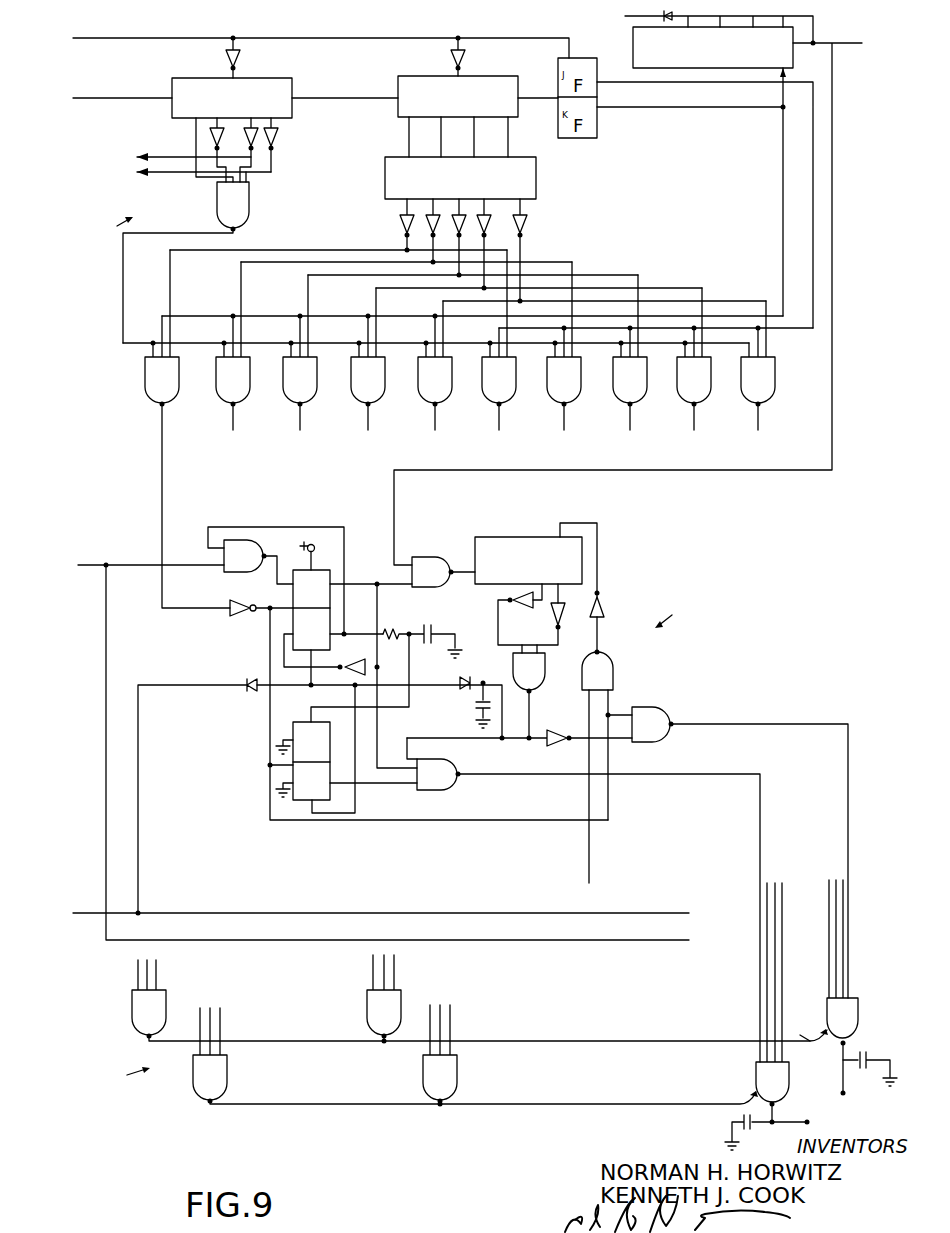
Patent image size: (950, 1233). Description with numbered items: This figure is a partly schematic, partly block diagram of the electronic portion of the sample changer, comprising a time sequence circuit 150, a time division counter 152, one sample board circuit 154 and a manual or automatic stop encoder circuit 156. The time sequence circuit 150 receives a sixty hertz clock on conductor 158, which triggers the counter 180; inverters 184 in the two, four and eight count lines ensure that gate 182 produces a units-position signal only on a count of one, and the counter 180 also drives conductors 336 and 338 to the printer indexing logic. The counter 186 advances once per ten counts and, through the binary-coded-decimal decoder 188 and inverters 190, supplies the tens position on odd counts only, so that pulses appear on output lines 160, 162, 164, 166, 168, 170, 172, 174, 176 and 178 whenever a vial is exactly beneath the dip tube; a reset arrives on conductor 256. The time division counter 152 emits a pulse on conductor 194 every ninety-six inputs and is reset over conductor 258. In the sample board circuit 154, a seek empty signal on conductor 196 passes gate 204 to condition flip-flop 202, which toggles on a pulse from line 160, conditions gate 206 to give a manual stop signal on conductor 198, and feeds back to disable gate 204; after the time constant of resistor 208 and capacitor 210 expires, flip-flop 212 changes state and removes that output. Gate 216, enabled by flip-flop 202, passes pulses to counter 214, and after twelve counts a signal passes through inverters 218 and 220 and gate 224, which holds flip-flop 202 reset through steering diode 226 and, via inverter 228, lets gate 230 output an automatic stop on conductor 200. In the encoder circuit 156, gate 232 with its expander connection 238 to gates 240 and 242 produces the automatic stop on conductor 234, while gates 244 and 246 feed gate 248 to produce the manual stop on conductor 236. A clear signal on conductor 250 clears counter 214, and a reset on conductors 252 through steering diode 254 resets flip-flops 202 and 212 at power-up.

The time sequence circuit 150 is at (102, 223).
The time division counter 152 is at (633, 41).
The sample board circuit 154 is at (686, 611).
The manual or automatic stop encoder circuit 156 is at (117, 1073).
The conductor 158 is at (83, 99).
The output line 160 is at (157, 411).
The output line 162 is at (232, 411).
The output line 164 is at (299, 411).
The output line 166 is at (367, 411).
The output line 168 is at (434, 411).
The output line 170 is at (498, 411).
The output line 172 is at (563, 411).
The output line 174 is at (629, 411).
The output line 176 is at (693, 411).
The output line 178 is at (757, 411).
The counter 180 is at (254, 76).
The gate 182 is at (251, 219).
The inverters 184 is at (279, 134).
The counter 186 is at (475, 80).
The decoder 188 is at (536, 192).
The inverters 190 is at (525, 228).
The conductor 194 is at (831, 43).
The conductor 196 is at (80, 563).
The conductor 198 is at (761, 844).
The conductor 200 is at (848, 749).
The flip-flop 202 is at (331, 570).
The gate 204 is at (241, 545).
The gate 206 is at (452, 760).
The resistor 208 is at (389, 631).
The capacitor 210 is at (435, 652).
The flip-flop 212 is at (288, 732).
The counter 214 is at (501, 537).
The gate 216 is at (428, 557).
The inverter 218 is at (507, 600).
The inverter 220 is at (535, 628).
The gate 224 is at (535, 678).
The steering diode 226 is at (466, 689).
The inverter 228 is at (569, 739).
The gate 230 is at (644, 707).
The gate 232 is at (858, 1012).
The conductor 234 is at (843, 1078).
The conductor 236 is at (782, 1122).
The expander connection 238 is at (797, 1032).
The gate 240 is at (131, 998).
The gate 242 is at (368, 1003).
The gate 244 is at (230, 1084).
The gate 246 is at (457, 1085).
The gate 248 is at (756, 1069).
The conductor 250 is at (592, 858).
The conductors 252 is at (100, 920).
The steering diode 254 is at (255, 684).
The conductor 256 is at (136, 36).
The conductor 258 is at (622, 16).
The conductor 336 is at (165, 157).
The conductor 338 is at (183, 173).